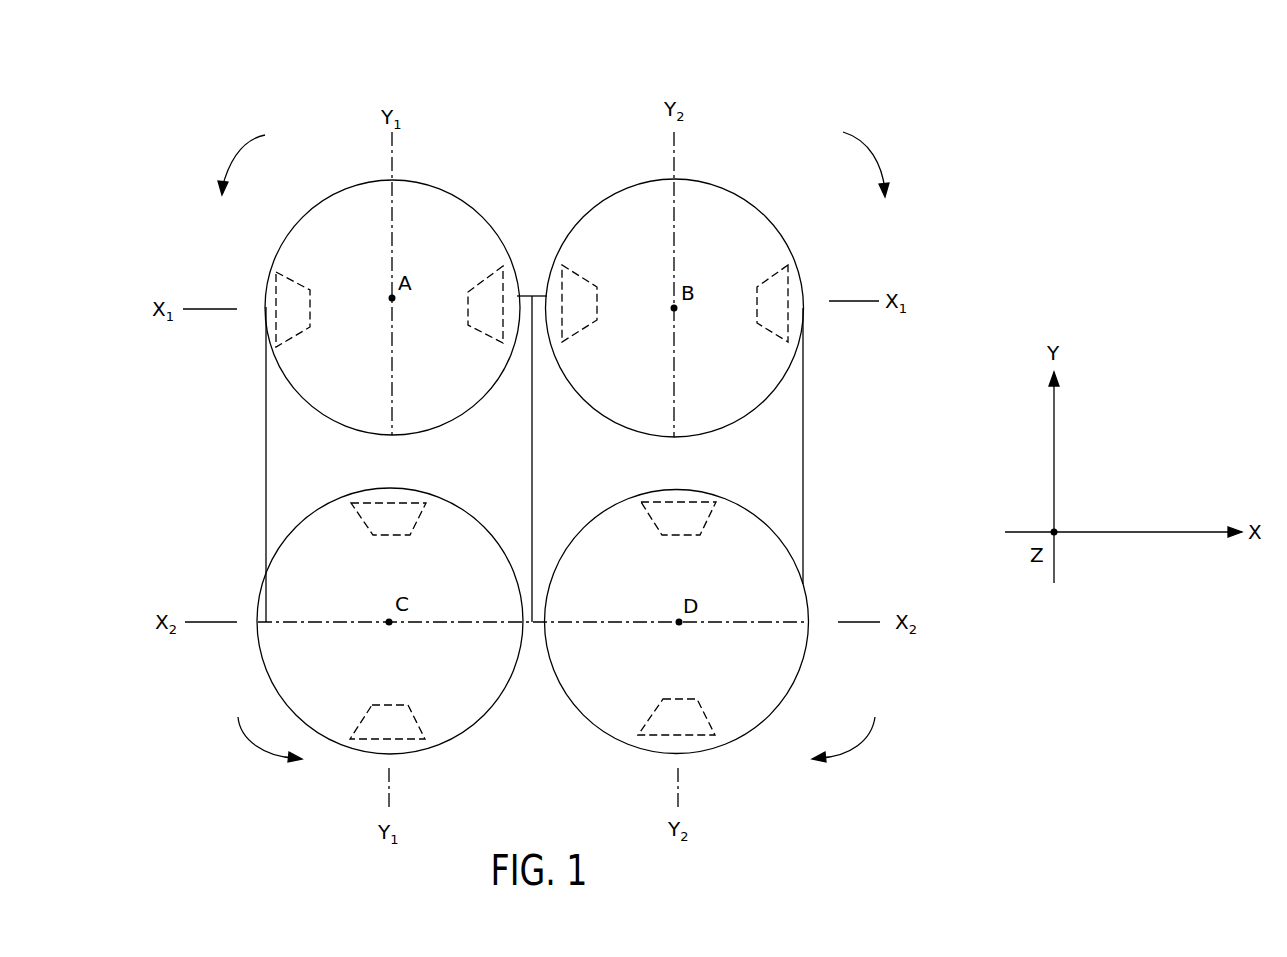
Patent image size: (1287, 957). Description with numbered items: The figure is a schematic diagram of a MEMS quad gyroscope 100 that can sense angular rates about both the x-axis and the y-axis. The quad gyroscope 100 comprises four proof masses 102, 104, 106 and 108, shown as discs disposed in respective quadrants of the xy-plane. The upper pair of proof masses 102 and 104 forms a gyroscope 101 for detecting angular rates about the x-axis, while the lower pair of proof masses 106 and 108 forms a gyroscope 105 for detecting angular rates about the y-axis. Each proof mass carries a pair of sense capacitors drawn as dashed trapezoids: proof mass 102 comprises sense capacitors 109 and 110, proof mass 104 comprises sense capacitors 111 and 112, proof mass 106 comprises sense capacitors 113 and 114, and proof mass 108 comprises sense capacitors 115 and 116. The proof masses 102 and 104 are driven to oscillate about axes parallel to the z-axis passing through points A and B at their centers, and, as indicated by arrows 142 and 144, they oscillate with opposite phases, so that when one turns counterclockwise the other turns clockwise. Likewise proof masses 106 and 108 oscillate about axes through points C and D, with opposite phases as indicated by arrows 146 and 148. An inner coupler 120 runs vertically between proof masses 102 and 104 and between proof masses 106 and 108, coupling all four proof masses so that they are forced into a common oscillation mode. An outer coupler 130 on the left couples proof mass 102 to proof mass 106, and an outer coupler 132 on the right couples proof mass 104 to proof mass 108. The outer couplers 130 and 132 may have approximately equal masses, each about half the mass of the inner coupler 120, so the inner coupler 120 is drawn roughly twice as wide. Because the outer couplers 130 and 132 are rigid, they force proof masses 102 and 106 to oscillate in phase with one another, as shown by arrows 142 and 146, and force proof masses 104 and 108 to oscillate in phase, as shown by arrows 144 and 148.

The quad gyroscope 100 is at (198, 110).
The gyroscope 101 is at (182, 208).
The proof mass 102 is at (303, 217).
The proof mass 104 is at (755, 207).
The gyroscope 105 is at (232, 780).
The proof mass 106 is at (281, 548).
The proof mass 108 is at (793, 687).
The sense capacitor 109 is at (312, 303).
The sense capacitor 110 is at (468, 313).
The sense capacitor 111 is at (600, 300).
The sense capacitor 112 is at (753, 317).
The sense capacitor 113 is at (385, 538).
The sense capacitor 114 is at (375, 702).
The sense capacitor 115 is at (675, 537).
The sense capacitor 116 is at (680, 698).
The inner coupler 120 is at (533, 462).
The outer coupler 130 is at (266, 462).
The outer coupler 132 is at (803, 430).
The arrow 142 is at (257, 159).
The arrow 144 is at (851, 159).
The arrow 146 is at (265, 726).
The arrow 148 is at (850, 726).